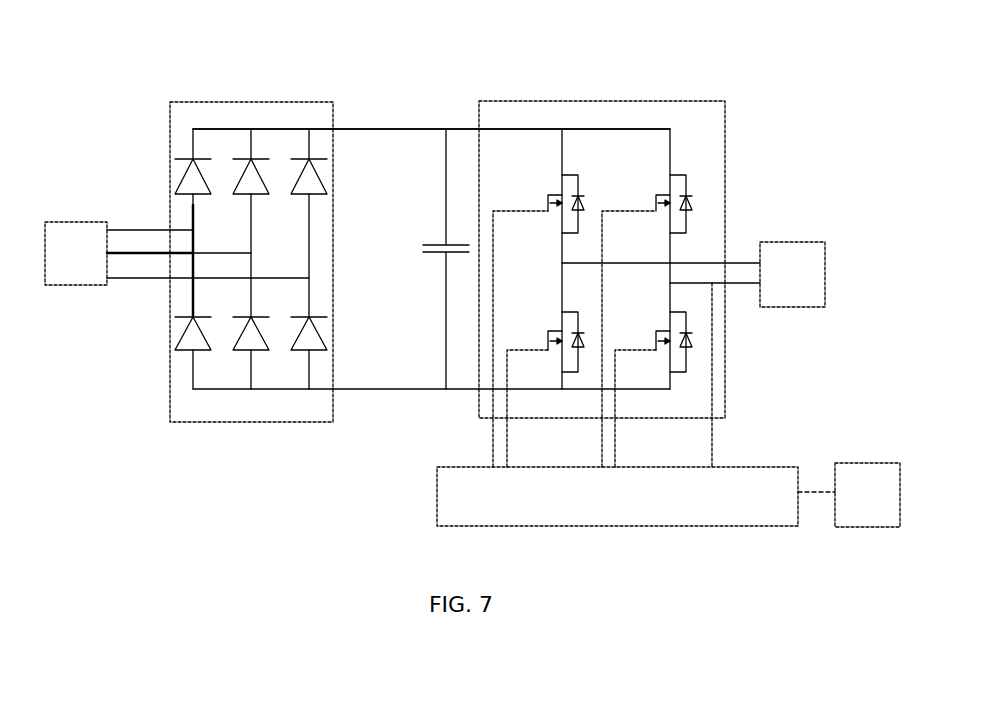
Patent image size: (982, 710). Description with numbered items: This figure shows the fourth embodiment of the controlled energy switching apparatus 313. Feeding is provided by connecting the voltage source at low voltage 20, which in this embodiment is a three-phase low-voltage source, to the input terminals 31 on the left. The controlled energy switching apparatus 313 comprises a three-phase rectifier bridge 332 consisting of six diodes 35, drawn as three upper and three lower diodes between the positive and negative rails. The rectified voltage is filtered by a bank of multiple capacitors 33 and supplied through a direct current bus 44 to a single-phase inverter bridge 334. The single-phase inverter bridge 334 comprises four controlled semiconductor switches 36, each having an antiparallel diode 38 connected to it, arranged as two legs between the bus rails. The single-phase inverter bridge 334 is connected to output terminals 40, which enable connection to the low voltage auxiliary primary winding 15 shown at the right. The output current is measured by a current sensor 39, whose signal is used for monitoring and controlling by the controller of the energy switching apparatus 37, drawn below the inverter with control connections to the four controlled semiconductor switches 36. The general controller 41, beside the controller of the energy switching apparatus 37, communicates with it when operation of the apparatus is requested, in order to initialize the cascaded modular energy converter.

The controlled energy switching apparatus 313 is at (258, 42).
The voltage source at low voltage 20 is at (75, 218).
The input terminals 31 is at (112, 287).
The three-phase rectifier bridge 332 is at (170, 100).
The diodes 35 is at (174, 182).
The direct current bus 44 is at (440, 128).
The bank of multiple capacitors 33 is at (440, 243).
The single-phase inverter bridge 334 is at (508, 100).
The controlled semiconductor switches 36 is at (555, 196).
The antiparallel diodes 38 is at (583, 205).
The current sensor 39 is at (713, 282).
The low voltage auxiliary primary winding 15 is at (775, 242).
The output terminals 40 is at (740, 292).
The controller of the energy switching apparatus 37 is at (440, 466).
The general controller 41 is at (845, 463).